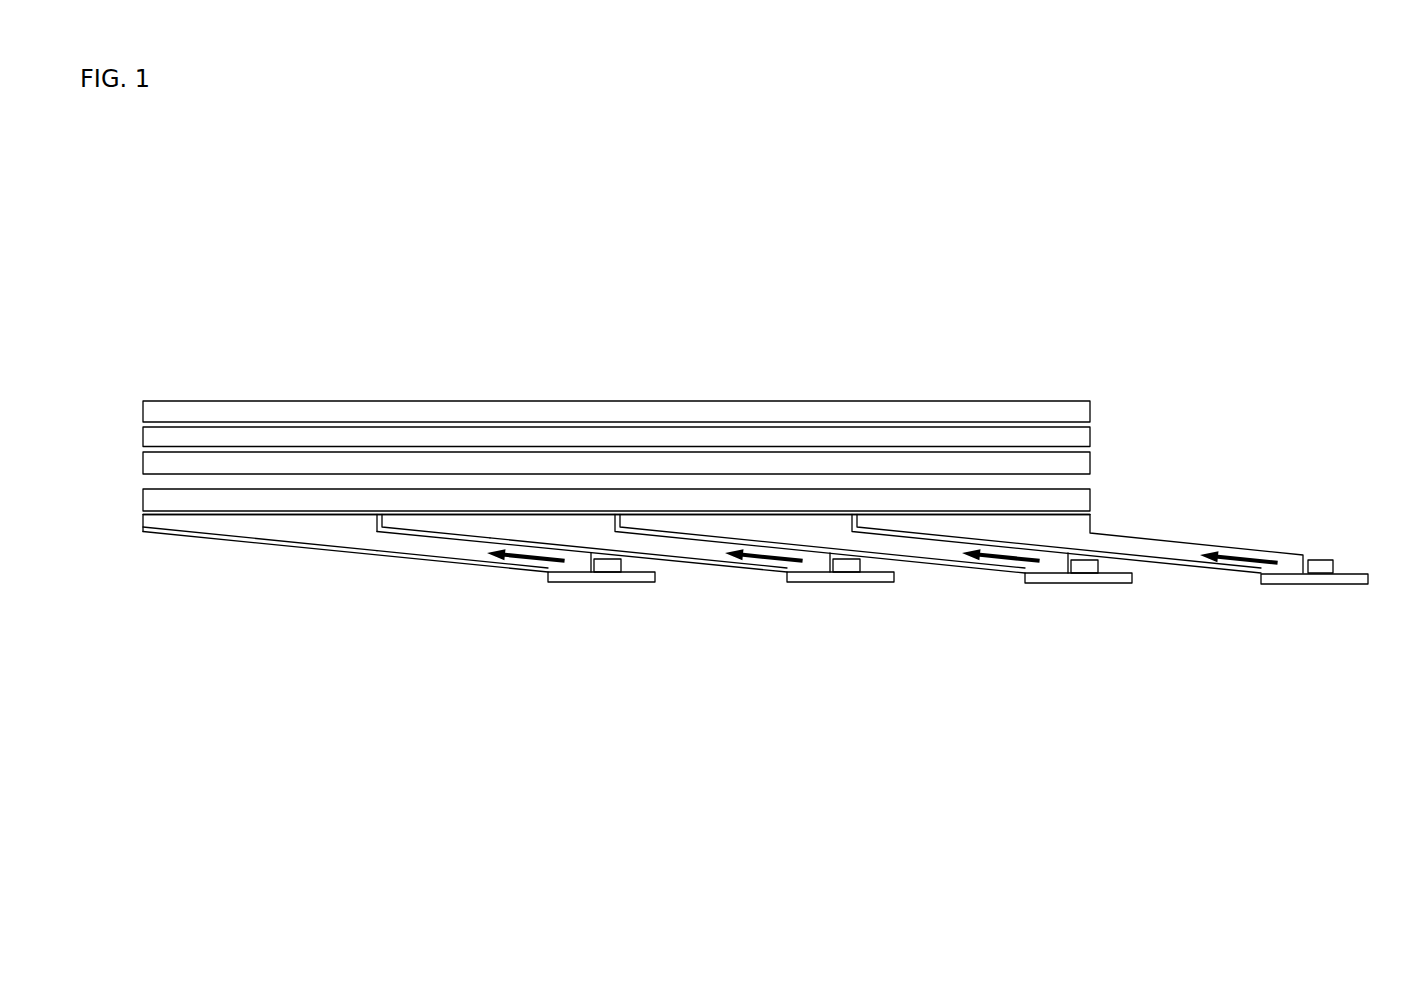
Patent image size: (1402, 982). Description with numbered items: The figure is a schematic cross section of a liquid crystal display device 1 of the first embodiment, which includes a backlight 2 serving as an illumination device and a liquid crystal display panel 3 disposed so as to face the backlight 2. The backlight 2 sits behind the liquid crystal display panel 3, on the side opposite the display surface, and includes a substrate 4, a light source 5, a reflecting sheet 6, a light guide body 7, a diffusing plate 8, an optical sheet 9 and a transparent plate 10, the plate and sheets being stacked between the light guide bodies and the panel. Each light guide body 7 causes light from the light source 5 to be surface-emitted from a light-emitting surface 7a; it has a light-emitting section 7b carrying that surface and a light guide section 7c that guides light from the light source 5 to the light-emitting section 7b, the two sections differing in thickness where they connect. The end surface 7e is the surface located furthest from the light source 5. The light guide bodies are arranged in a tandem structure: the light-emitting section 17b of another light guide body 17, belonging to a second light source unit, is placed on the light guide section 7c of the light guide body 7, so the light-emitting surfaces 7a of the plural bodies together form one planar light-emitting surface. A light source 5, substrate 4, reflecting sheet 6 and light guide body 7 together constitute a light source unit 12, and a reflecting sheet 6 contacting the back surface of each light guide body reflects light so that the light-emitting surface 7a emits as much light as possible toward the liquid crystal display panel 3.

The liquid crystal display device 1 is at (943, 308).
The backlight 2 is at (97, 429).
The liquid crystal display panel 3 is at (143, 407).
The substrate 4 is at (568, 583).
The light source 5 is at (610, 572).
The reflecting sheet 6 is at (160, 534).
The light guide body 7 is at (143, 521).
The light-emitting surface 7a is at (258, 514).
The light-emitting section 7b is at (273, 524).
The light guide section 7c is at (422, 548).
The end surface 7e is at (377, 519).
The diffusing plate 8 is at (143, 462).
The optical sheet 9 is at (143, 437).
The transparent plate 10 is at (143, 498).
The light source unit 12 is at (328, 581).
The another light guide body 17 is at (695, 553).
The light-emitting section 17b is at (490, 523).